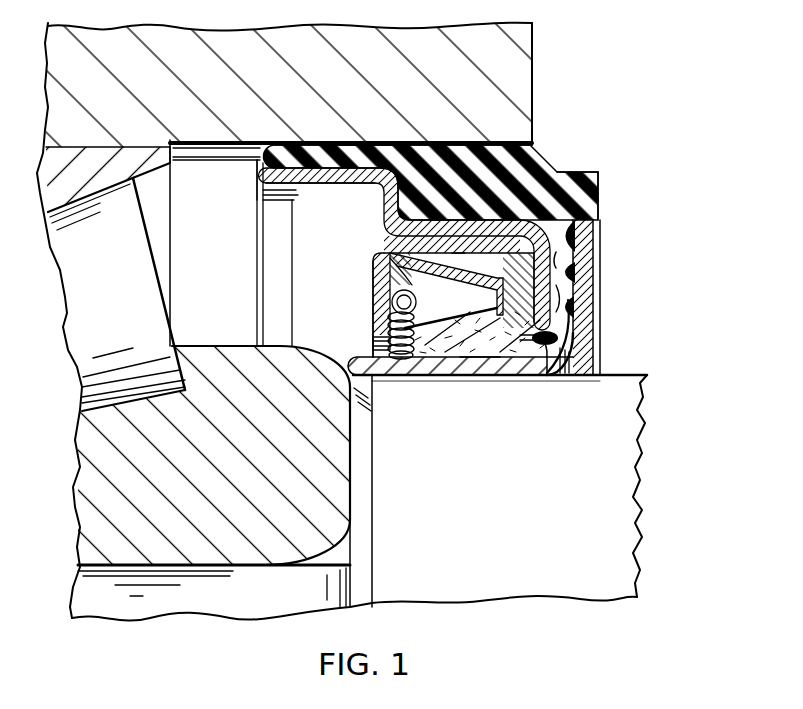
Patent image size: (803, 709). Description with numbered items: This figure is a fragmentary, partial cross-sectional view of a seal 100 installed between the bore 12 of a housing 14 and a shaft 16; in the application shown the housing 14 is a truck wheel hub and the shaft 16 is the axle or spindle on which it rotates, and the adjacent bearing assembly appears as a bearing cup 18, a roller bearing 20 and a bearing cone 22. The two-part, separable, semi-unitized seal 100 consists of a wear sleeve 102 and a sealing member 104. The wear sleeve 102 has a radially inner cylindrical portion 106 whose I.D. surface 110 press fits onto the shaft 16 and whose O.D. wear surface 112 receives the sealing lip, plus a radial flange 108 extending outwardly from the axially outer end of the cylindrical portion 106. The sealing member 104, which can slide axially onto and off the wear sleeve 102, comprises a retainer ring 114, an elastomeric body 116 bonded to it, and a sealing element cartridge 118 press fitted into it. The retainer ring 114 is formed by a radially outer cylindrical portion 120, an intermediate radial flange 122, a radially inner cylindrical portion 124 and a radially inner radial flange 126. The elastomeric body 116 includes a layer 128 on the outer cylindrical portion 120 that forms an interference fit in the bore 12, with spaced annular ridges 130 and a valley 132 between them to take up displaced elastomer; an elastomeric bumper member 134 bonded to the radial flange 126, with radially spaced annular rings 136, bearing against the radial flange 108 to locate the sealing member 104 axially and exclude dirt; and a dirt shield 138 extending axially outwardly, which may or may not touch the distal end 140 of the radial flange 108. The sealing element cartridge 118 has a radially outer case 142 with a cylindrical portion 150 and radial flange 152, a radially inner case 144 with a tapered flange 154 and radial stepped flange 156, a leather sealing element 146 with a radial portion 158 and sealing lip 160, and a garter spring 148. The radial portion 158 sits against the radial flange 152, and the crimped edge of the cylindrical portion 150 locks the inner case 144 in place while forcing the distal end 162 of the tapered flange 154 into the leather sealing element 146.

The bore 12 is at (250, 148).
The housing 14 is at (533, 61).
The shaft 16 is at (625, 504).
The bearing cup 18 is at (168, 164).
The roller bearing 20 is at (147, 292).
The bearing cone 22 is at (207, 357).
The seal 100 is at (613, 120).
The wear sleeve 102 is at (662, 280).
The sealing member 104 is at (553, 153).
The radially inner cylindrical portion 106 is at (480, 375).
The radial flange 108 is at (588, 300).
The I.D. surface 110 is at (459, 382).
The O.D. wear surface 112 is at (455, 360).
The retainer ring 114 is at (361, 189).
The elastomeric body 116 is at (592, 167).
The sealing element cartridge 118 is at (369, 265).
The radially outer cylindrical portion 120 is at (303, 186).
The intermediate radial flange 122 is at (387, 208).
The radially inner cylindrical portion 124 is at (378, 245).
The radially inner radial flange 126 is at (582, 357).
The layer of elastomer 128 is at (312, 155).
The annular ridges 130 is at (392, 137).
The valley 132 is at (368, 140).
The elastomeric bumper member 134 is at (578, 318).
The annular rings 136 is at (580, 246).
The dirt shield 138 is at (592, 191).
The distal end 140 is at (594, 214).
The radially outer case 142 is at (440, 235).
The radially inner case 144 is at (376, 318).
The leather sealing element 146 is at (497, 378).
The garter spring 148 is at (420, 305).
The cylindrical portion 150 is at (378, 282).
The radial flange 152 is at (522, 335).
The tapered flange 154 is at (457, 267).
The radial stepped flange 156 is at (380, 293).
The radial portion 158 is at (580, 258).
The sealing lip 160 is at (420, 348).
The distal end 162 is at (527, 360).